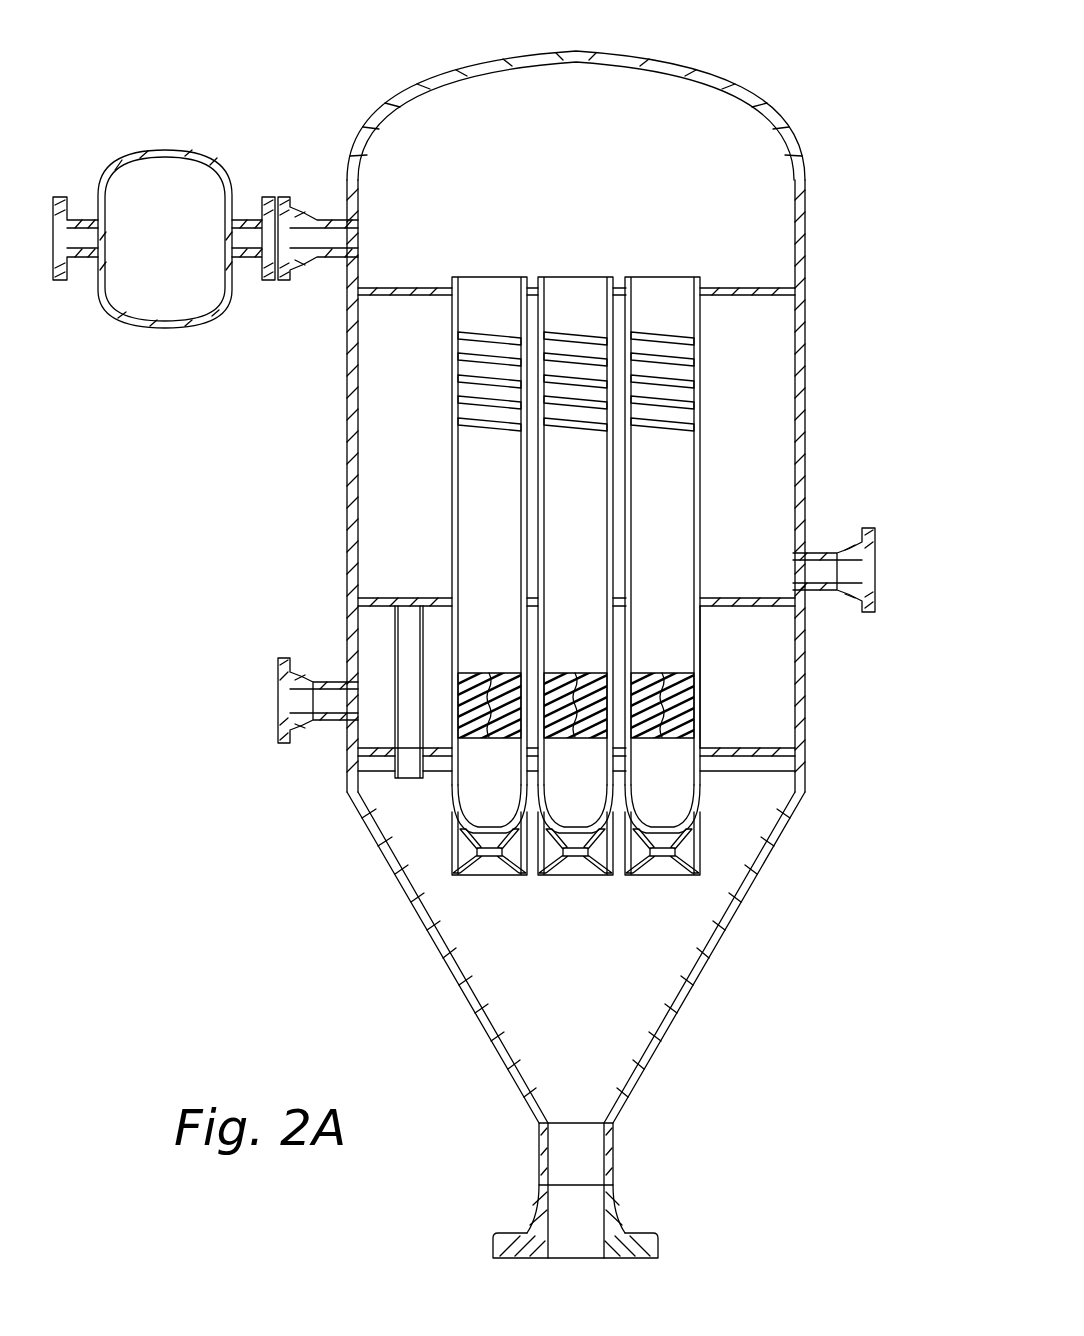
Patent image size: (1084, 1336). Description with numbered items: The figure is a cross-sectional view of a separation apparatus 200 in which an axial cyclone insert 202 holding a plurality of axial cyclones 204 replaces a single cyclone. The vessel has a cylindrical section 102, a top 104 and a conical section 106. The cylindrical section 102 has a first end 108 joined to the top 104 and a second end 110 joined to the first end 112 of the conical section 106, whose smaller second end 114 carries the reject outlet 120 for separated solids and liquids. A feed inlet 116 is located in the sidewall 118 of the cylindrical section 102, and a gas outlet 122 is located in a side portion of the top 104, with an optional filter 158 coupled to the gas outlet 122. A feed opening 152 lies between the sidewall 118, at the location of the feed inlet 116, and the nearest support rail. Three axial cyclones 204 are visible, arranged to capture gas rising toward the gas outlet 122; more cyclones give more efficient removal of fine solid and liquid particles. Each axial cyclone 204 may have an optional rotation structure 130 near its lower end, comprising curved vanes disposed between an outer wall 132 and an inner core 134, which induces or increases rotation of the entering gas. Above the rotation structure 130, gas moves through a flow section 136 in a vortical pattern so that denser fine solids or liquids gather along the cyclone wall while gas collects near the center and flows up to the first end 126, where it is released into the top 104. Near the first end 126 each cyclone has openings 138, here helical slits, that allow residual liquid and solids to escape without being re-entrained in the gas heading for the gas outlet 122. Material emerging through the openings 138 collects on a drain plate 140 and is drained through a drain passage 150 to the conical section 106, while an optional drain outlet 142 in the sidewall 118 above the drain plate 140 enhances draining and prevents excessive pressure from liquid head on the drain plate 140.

The separation apparatus 200 is at (222, 38).
The cylindrical section 102 is at (346, 366).
The top 104 is at (443, 78).
The conical section 106 is at (705, 960).
The first end 108 is at (806, 400).
The second end 110 is at (806, 748).
The first end 112 is at (365, 823).
The second end 114 is at (613, 1155).
The feed inlet 116 is at (278, 688).
The sidewall 118 is at (358, 430).
The reject outlet 120 is at (658, 1245).
The gas outlet 122 is at (286, 200).
The first end 126 is at (702, 275).
The rotation structure 130 is at (662, 695).
The outer wall 132 is at (700, 655).
The inner core 134 is at (580, 675).
The flow section 136 is at (452, 558).
The openings 138 is at (700, 368).
The drain plate 140 is at (760, 598).
The drain outlet 142 is at (878, 548).
The drain passage 150 is at (355, 692).
The feed opening 152 is at (377, 754).
The filter 158 is at (168, 150).
The axial cyclone insert 202 is at (443, 238).
The axial cyclones 204 is at (698, 576).